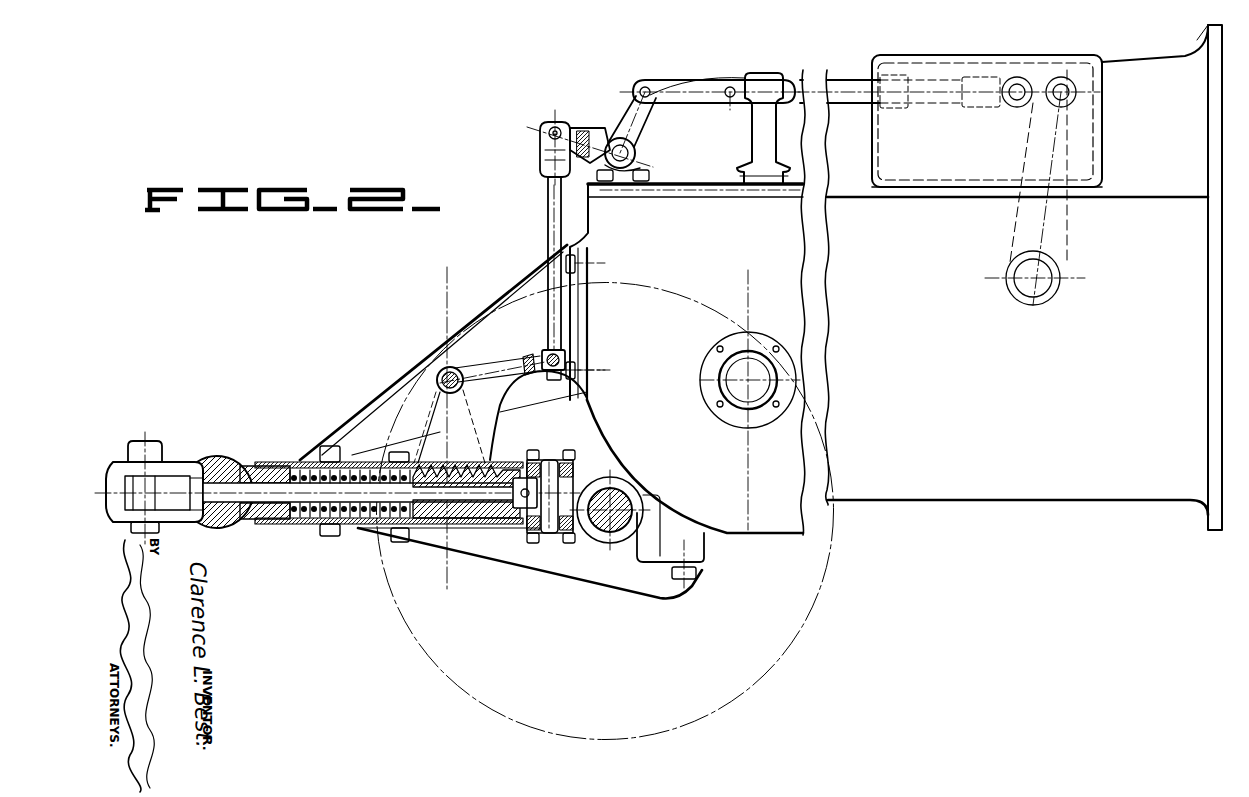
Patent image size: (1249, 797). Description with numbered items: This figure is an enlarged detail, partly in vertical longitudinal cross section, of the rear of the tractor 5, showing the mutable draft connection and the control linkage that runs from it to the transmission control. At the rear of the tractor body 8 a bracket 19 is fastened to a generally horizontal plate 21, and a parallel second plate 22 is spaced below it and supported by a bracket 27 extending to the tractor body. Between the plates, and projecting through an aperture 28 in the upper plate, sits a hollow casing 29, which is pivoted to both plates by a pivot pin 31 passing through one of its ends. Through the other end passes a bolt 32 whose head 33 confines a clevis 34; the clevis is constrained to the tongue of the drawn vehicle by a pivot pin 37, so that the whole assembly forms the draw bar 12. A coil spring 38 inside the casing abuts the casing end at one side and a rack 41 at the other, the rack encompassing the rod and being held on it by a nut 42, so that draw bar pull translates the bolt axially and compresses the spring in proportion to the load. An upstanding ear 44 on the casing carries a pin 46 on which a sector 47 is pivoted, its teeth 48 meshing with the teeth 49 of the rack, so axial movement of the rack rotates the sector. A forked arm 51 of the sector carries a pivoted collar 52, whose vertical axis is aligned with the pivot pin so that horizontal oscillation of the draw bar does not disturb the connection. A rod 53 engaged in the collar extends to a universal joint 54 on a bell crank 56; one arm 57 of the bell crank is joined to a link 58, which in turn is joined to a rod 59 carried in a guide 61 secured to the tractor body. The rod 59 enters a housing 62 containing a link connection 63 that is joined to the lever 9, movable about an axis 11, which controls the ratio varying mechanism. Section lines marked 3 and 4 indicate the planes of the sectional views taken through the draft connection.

The section line 3- 3 is at (90, 488).
The section line 4- 4 is at (425, 590).
The tractor 5 is at (1078, 502).
The tractor body 8 is at (1045, 381).
The lever 9 is at (1063, 232).
The axis 11 is at (1045, 268).
The draw bar 12 is at (346, 537).
The bracket 19 is at (427, 361).
The plate 21 is at (281, 465).
The second plate 22 is at (306, 525).
The bracket 27 is at (590, 572).
The aperture 28 is at (509, 463).
The casing 29 is at (250, 513).
The pivot pin 31 is at (549, 465).
The bolt 32 is at (241, 483).
The head 33 is at (190, 465).
The clevis 34 is at (216, 456).
The pivot pin 37 is at (153, 445).
The coil spring 38 is at (268, 522).
The rack 41 is at (432, 482).
The nut 42 is at (526, 508).
The ear 44 is at (433, 383).
The pin 46 is at (452, 375).
The sector 47 is at (497, 423).
The teeth 48 is at (425, 418).
The teeth 49 is at (471, 511).
The forked arm 51 is at (528, 357).
The collar 52 is at (543, 350).
The rod 53 is at (549, 219).
The universal joint 54 is at (540, 148).
The bell crank 56 is at (594, 136).
The arm 57 is at (635, 100).
The link 58 is at (680, 84).
The rod 59 is at (812, 82).
The guide 61 is at (757, 142).
The housing 62 is at (940, 62).
The link connection 63 is at (1033, 105).